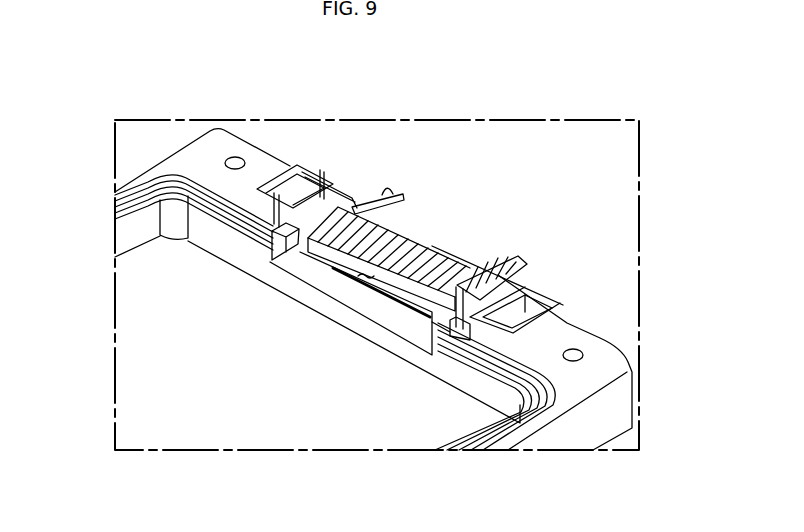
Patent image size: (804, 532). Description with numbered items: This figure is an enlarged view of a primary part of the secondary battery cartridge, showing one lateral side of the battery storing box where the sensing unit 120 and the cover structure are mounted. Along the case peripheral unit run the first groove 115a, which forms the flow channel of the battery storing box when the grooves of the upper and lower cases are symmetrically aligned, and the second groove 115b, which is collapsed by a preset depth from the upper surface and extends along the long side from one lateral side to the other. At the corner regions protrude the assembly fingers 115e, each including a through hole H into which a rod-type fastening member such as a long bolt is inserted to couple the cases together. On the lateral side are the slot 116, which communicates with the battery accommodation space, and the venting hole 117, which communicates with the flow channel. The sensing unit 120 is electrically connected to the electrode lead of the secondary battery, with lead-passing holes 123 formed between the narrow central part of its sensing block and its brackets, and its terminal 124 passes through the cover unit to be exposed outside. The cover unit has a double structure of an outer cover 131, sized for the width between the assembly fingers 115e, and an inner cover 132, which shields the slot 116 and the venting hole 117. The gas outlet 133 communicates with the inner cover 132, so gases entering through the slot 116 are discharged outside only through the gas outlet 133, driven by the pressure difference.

The first groove 115a is at (132, 210).
The second groove 115b is at (138, 190).
The assembly finger 115e is at (258, 160).
The through hole H is at (235, 163).
The slot 116 is at (378, 308).
The venting hole 117 is at (318, 195).
The sensing unit 120 is at (403, 265).
The lead-passing hole 123 is at (343, 277).
The terminal 124 is at (505, 260).
The outer cover 131 is at (277, 193).
The inner cover 132 is at (332, 178).
The gas outlet 133 is at (386, 186).